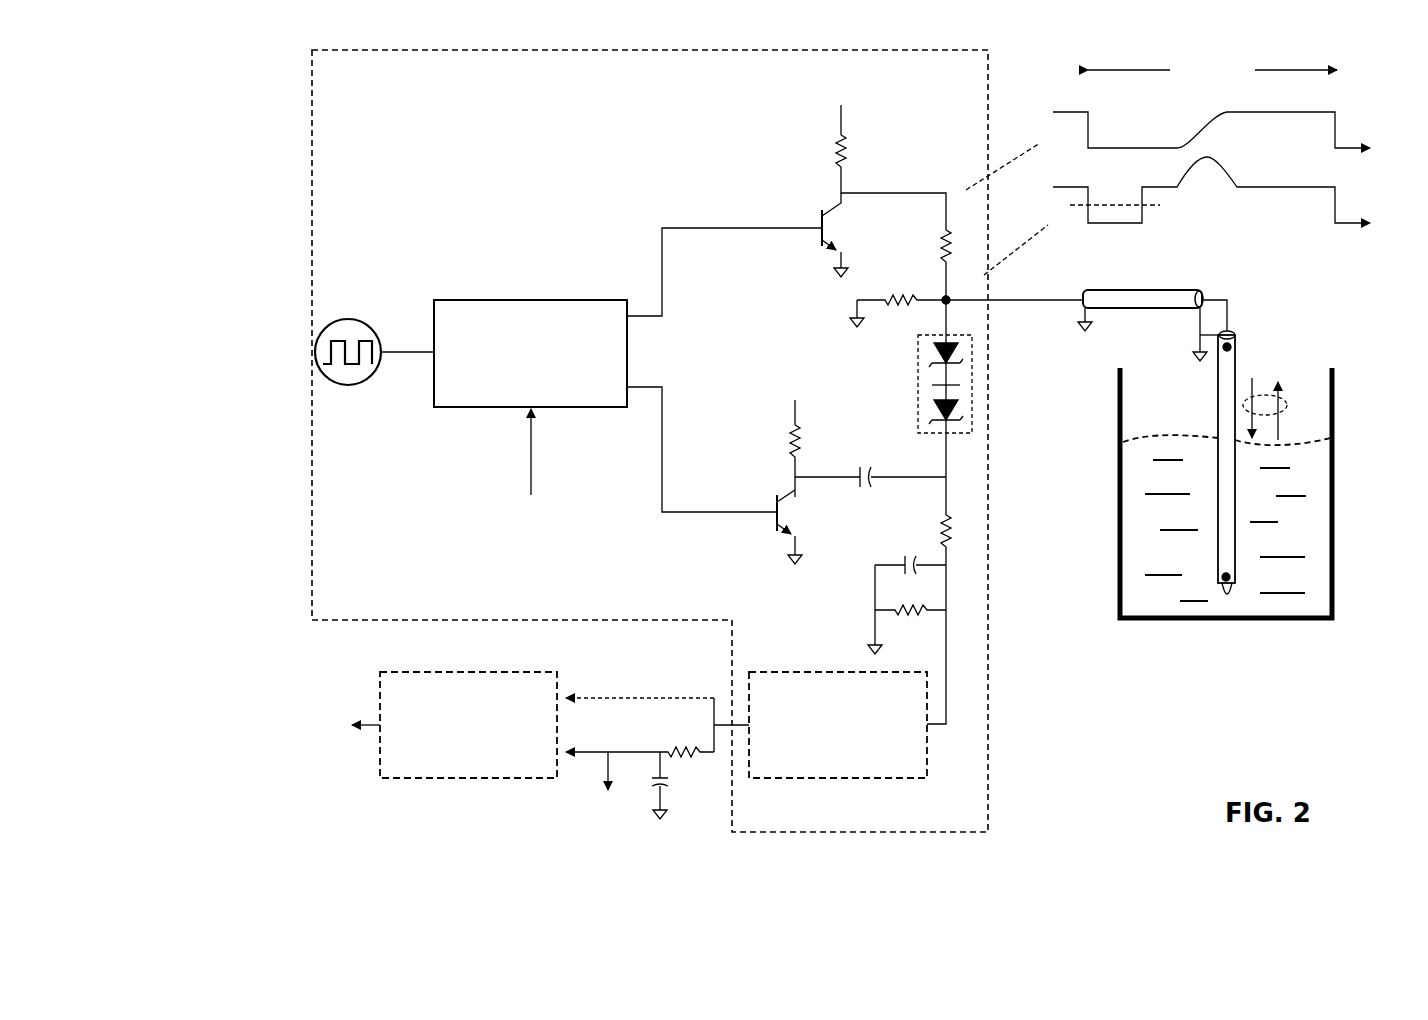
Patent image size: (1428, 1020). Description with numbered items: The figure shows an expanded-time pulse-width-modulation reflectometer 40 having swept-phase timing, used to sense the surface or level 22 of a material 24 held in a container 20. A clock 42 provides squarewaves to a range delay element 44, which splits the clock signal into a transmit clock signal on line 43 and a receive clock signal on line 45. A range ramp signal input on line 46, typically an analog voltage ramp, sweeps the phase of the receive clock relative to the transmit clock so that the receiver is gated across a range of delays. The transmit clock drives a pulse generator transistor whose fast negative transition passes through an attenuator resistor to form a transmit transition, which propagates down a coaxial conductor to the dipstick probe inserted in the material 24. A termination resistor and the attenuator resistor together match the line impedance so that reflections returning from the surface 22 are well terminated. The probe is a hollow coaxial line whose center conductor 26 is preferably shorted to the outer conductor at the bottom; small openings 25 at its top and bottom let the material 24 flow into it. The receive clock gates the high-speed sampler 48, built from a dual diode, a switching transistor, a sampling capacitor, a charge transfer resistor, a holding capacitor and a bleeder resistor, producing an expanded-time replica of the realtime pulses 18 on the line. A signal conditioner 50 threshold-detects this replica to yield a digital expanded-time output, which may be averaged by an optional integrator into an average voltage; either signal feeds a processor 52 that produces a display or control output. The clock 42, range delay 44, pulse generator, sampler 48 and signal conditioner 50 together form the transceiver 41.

The PWM pulses 18 is at (1142, 216).
The container 20 is at (1335, 510).
The surface or level 22 is at (1155, 443).
The material 24 is at (1225, 530).
The small openings 25 is at (1235, 345).
The center conductor 26 is at (1230, 302).
The expanded-time PWM reflectometer 40 is at (272, 103).
The transceiver 41 is at (310, 512).
The clock 42 is at (348, 387).
The TX CLOCK line 43 is at (722, 229).
The range delay element 44 is at (534, 299).
The RX CLOCK line 45 is at (715, 513).
The range ramp input line 46 is at (530, 435).
The sampler 48 is at (974, 560).
The signal conditioner 50 is at (928, 742).
The processor 52 is at (380, 762).